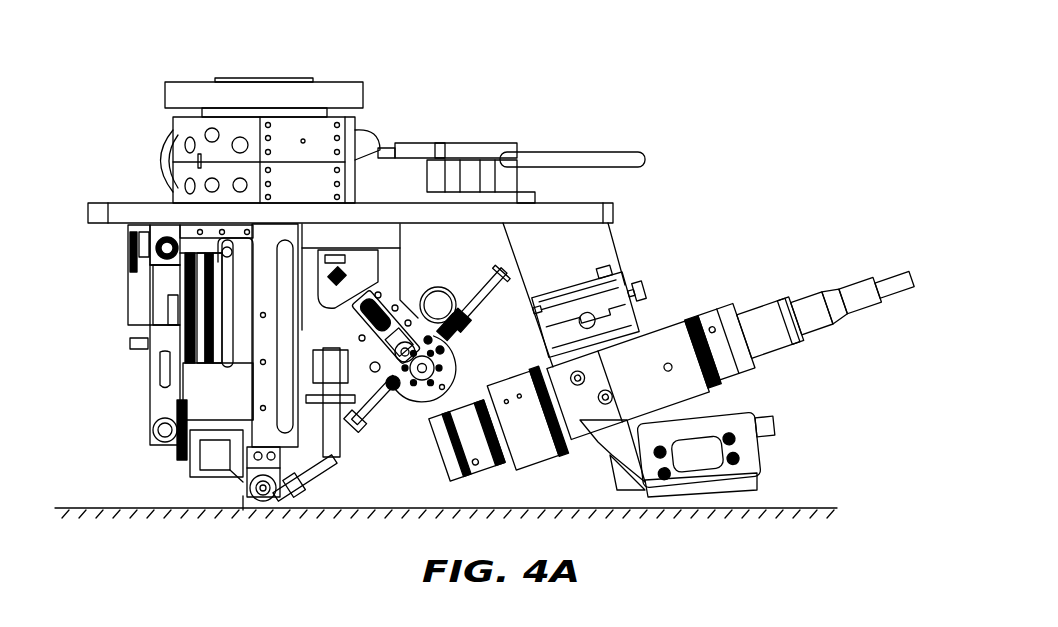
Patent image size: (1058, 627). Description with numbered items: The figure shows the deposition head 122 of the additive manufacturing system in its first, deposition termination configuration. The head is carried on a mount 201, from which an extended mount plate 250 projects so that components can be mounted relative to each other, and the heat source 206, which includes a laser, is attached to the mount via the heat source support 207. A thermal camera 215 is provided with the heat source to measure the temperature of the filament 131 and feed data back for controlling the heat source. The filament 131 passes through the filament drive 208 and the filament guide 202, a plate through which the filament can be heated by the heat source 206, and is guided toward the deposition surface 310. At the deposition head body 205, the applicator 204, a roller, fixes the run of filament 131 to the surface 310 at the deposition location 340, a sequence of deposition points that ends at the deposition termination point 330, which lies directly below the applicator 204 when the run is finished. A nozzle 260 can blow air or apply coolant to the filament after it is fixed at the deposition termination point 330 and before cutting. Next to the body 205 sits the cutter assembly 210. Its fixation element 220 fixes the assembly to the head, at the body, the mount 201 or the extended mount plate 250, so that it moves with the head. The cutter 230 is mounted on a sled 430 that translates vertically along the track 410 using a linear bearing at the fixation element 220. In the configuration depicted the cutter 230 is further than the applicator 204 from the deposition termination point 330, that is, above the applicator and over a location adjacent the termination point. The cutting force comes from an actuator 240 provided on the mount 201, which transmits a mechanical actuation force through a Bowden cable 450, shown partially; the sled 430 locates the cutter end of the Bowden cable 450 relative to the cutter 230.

The deposition head 122 is at (840, 70).
The mount 201 is at (343, 82).
The actuator 240 is at (475, 143).
The Bowden cable 450 is at (625, 152).
The extended mount plate 250 is at (605, 202).
The heat source support 207 is at (610, 242).
The filament 131 is at (480, 290).
The filament drive 208 is at (453, 363).
The heat source 206 is at (798, 343).
The cutter assembly 210 is at (118, 365).
The track 410 is at (180, 392).
The fixation element 220 is at (145, 427).
The sled 430 is at (197, 450).
The cutter 230 is at (207, 470).
The nozzle 260 is at (243, 482).
The deposition location 340 is at (243, 510).
The deposition termination point 330 is at (267, 502).
The applicator 204 is at (280, 493).
The filament guide 202 is at (320, 477).
The deposition head body 205 is at (323, 477).
The deposition surface 310 is at (530, 507).
The thermal camera 215 is at (760, 462).